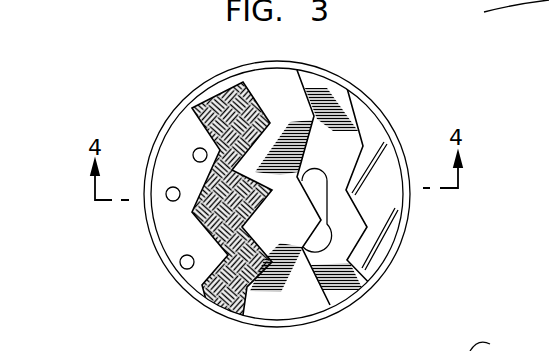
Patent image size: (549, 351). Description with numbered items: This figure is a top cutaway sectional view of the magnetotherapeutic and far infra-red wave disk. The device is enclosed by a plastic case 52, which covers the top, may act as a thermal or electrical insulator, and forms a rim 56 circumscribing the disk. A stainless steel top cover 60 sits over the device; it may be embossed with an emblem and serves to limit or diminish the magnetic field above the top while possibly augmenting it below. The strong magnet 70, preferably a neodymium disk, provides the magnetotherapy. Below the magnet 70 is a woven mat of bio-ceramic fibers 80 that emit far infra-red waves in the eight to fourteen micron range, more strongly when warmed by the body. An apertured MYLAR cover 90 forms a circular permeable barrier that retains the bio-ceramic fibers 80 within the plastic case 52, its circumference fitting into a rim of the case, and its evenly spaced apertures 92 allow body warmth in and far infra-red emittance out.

The plastic case 52 is at (403, 240).
The rim 56 is at (348, 81).
The stainless steel top cover 60 is at (352, 318).
The strong magnet 70 is at (262, 74).
The bio-ceramic fibers 80 is at (227, 315).
The apertured MYLAR cover 90 is at (172, 133).
The apertures 92 is at (167, 201).